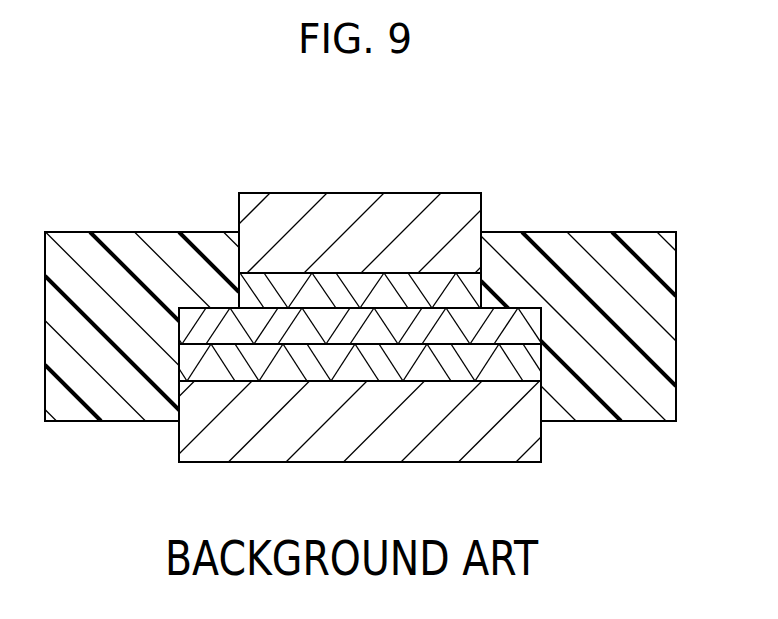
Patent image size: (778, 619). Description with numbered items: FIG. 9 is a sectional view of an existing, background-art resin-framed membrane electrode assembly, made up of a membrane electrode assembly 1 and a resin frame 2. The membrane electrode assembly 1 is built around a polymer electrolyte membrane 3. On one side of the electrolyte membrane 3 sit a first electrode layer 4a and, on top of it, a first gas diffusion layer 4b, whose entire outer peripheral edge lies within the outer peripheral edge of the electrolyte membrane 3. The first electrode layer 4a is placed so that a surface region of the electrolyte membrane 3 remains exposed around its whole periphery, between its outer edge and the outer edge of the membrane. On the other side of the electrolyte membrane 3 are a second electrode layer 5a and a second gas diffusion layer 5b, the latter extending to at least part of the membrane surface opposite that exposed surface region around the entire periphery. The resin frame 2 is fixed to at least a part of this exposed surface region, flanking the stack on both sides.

The membrane electrode assembly 1 is at (292, 188).
The resin frame 2 is at (663, 282).
The polymer electrolyte membrane 3 is at (518, 330).
The first electrode layer 4a is at (468, 298).
The first gas diffusion layer 4b is at (412, 203).
The second electrode layer 5a is at (472, 373).
The second gas diffusion layer 5b is at (448, 442).